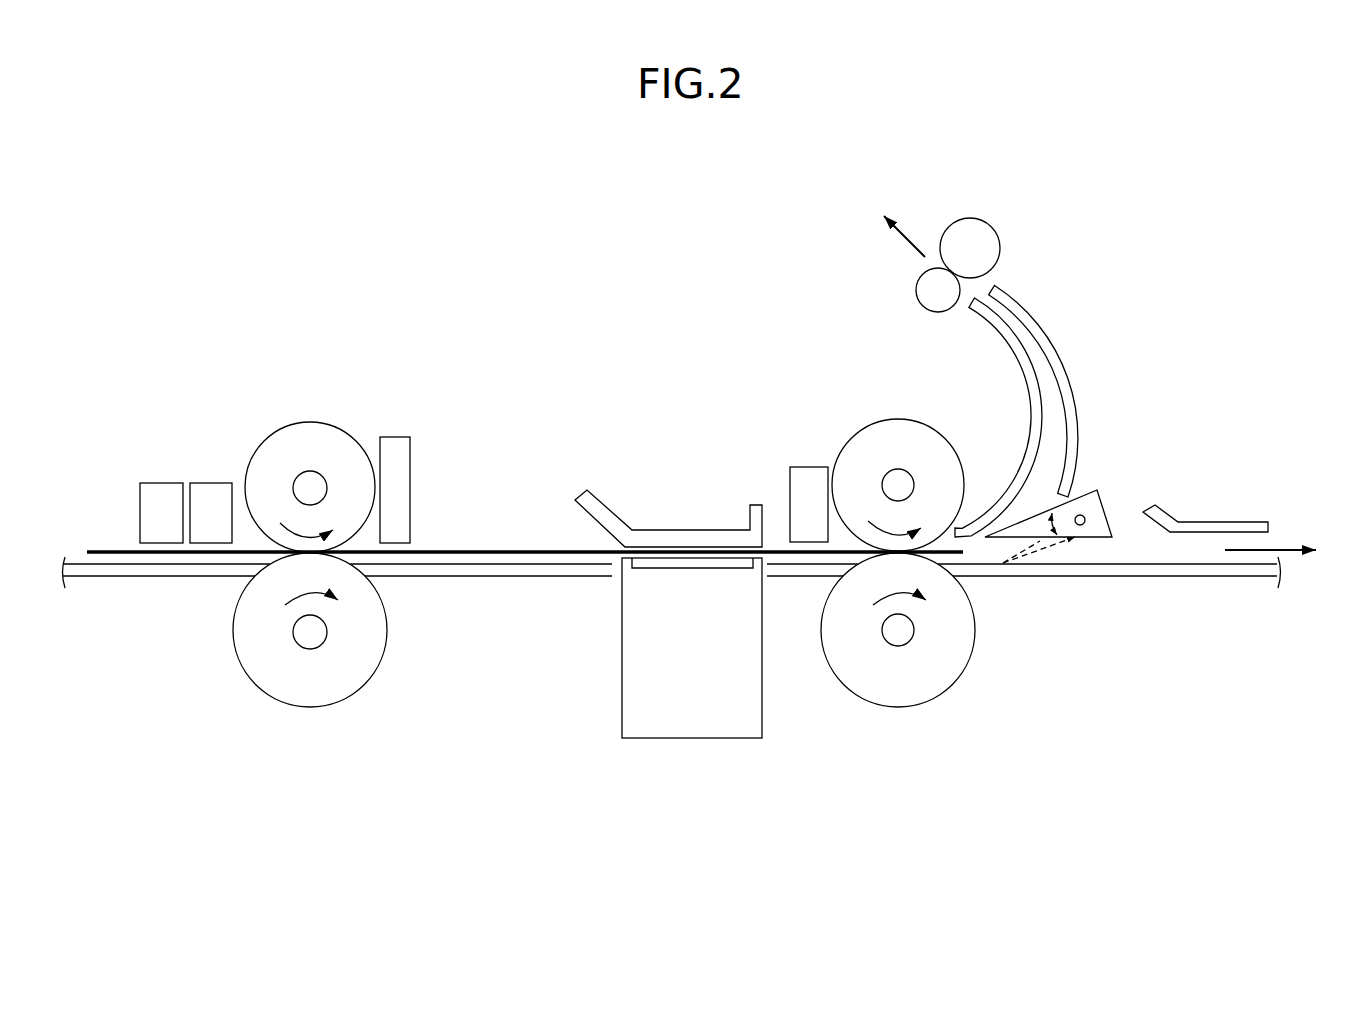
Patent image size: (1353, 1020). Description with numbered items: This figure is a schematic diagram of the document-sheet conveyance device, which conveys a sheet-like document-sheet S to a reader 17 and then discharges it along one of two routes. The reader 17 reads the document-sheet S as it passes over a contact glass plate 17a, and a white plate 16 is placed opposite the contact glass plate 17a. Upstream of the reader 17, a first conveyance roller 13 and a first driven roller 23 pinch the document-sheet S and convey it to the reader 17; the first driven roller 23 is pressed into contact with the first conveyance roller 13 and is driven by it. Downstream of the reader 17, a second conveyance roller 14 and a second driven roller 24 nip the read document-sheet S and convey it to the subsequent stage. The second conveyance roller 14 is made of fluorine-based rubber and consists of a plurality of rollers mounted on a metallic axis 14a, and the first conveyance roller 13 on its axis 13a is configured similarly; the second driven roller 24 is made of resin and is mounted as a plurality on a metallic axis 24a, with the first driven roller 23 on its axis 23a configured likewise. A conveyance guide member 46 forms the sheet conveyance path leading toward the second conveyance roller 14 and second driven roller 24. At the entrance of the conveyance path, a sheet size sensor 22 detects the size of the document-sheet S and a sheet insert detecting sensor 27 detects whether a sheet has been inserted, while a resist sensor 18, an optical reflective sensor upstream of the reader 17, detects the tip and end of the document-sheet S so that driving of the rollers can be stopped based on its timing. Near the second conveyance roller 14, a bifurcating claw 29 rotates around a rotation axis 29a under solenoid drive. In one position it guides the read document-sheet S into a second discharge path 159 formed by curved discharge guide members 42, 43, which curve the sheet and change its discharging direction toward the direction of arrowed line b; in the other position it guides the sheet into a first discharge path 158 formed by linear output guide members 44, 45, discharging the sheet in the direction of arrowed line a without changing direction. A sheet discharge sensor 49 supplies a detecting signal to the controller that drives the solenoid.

The document-sheet S is at (100, 552).
The first conveyance roller 13 is at (323, 695).
The axis of the first conveyance roller 13a is at (317, 632).
The second conveyance roller 14 is at (945, 675).
The metallic axis of the second conveyance roller 14a is at (912, 632).
The white plate 16 is at (600, 515).
The reader 17 is at (685, 720).
The contact glass plate 17a is at (695, 568).
The resist sensor 18 is at (390, 438).
The sheet size sensor 22 is at (212, 490).
The first driven roller 23 is at (267, 467).
The axis of the first driven roller 23a is at (308, 477).
The second driven roller 24 is at (865, 455).
The metallic axis of the second driven roller 24a is at (900, 480).
The sheet insert detecting sensor 27 is at (160, 493).
The bifurcating claw 29 is at (1097, 512).
The rotation axis 29a is at (1080, 514).
The curved discharge guide member 42 is at (1033, 315).
The curved discharge guide member 43 is at (1030, 377).
The linear output guide member 44 is at (1243, 527).
The linear output guide member 45 is at (1210, 572).
The conveyance guide member 46 is at (155, 570).
The sheet discharge sensor 49 is at (805, 468).
The first discharge path 158 is at (1200, 547).
The second discharge path 159 is at (997, 313).
The arrowed line a is at (1270, 537).
The arrowed line b is at (904, 239).